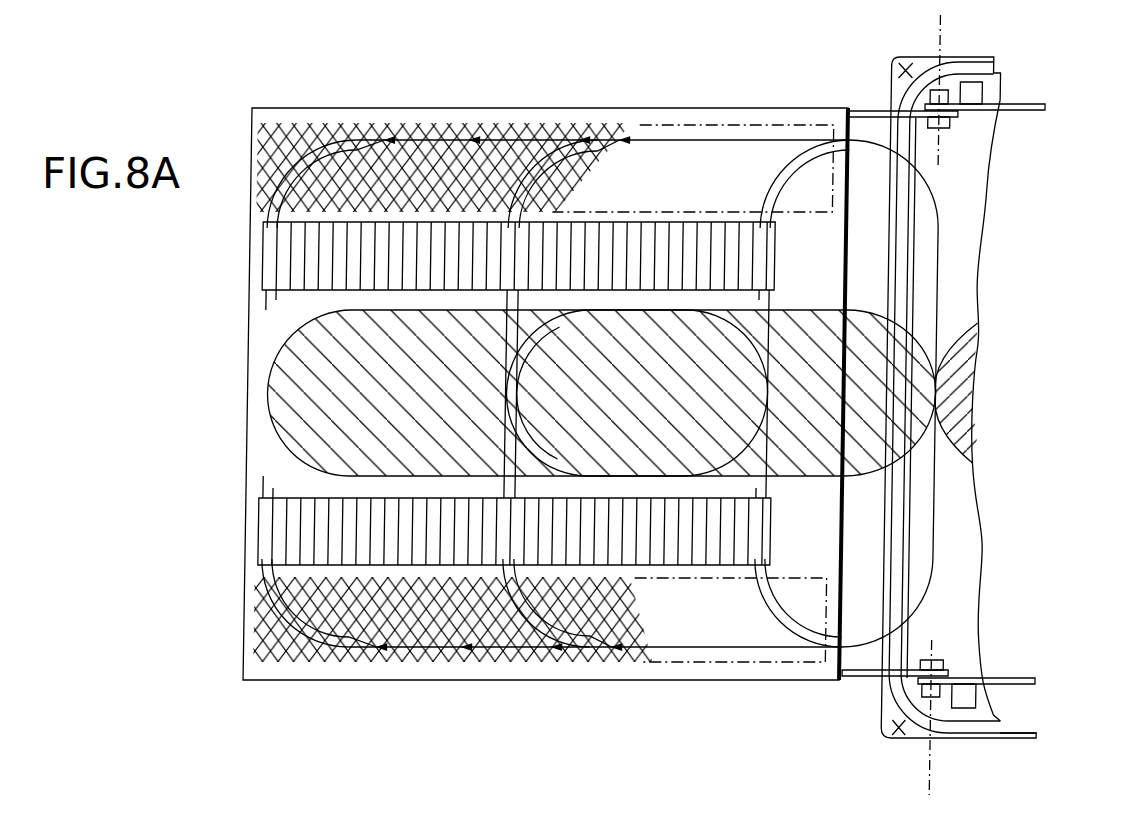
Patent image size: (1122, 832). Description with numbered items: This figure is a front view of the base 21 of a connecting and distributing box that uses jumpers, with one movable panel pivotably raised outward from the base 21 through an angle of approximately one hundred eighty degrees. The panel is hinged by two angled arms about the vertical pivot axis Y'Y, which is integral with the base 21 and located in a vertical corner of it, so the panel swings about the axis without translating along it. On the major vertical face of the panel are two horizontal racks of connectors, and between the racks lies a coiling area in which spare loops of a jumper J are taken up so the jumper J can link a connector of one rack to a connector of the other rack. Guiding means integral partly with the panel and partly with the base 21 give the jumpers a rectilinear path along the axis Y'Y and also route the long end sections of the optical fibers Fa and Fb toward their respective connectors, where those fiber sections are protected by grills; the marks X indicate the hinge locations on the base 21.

The optical fiber Fb is at (766, 141).
The optical fiber Fa is at (770, 646).
The jumper J is at (943, 522).
The base 21 is at (975, 55).
The X axis marker X is at (902, 399).
The vertical pivot axis Y is at (929, 88).
The vertical pivot axis Y' is at (924, 717).